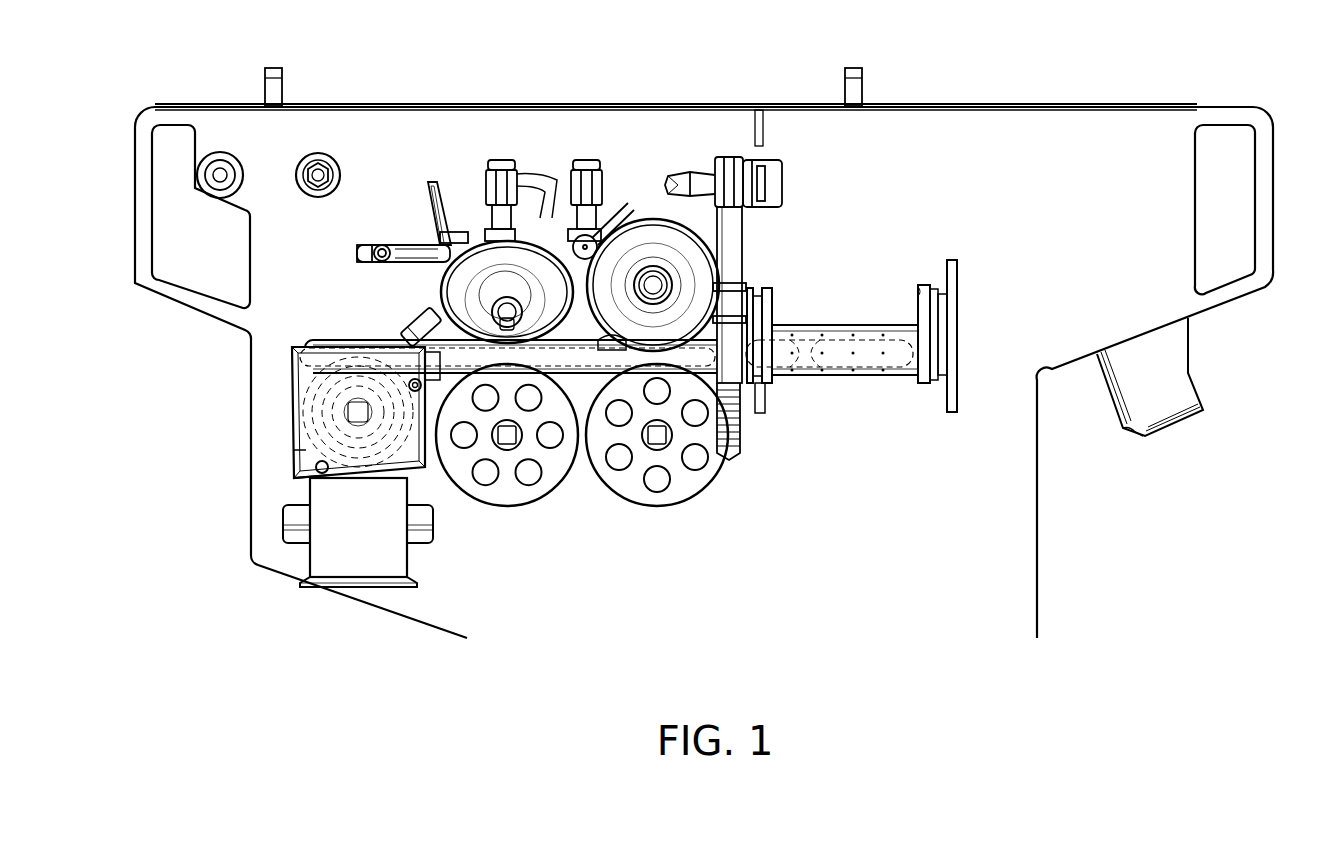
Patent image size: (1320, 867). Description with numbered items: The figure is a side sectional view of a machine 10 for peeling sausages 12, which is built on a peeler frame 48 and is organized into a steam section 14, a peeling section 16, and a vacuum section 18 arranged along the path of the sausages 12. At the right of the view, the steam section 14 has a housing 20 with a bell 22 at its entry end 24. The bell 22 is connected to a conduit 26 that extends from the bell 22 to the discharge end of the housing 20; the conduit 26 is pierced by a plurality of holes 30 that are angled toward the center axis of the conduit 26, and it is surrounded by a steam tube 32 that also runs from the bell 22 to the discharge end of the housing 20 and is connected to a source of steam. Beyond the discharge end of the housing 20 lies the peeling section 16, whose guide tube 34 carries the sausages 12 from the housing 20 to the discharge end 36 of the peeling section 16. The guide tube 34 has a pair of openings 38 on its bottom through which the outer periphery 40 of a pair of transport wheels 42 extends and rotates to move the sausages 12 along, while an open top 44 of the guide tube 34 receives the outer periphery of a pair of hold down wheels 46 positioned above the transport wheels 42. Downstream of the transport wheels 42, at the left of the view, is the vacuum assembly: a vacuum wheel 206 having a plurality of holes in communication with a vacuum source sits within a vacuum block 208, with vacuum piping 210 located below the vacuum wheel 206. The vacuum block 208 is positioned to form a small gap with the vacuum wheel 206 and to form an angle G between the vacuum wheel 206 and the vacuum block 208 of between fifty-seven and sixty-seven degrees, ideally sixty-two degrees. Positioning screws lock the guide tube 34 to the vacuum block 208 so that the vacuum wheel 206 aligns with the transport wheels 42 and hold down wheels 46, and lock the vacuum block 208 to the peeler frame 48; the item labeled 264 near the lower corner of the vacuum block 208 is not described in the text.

The machine 10 is at (990, 25).
The sausages 12 is at (355, 340).
The steam section 14 is at (884, 276).
The peeling section 16 is at (621, 138).
The vacuum section 18 is at (444, 576).
The housing 20 is at (1216, 107).
The bell 22 is at (958, 283).
The entry end 24 is at (982, 341).
The conduit 26 is at (896, 376).
The holes 30 is at (853, 331).
The steam tube 32 is at (812, 314).
The guide tube 34 is at (565, 373).
The discharge end 36 is at (437, 376).
The openings 38 is at (534, 360).
The outer periphery 40 is at (488, 498).
The transport wheels 42 is at (517, 491).
The open top 44 is at (613, 346).
The hold down wheels 46 is at (461, 286).
The peeler frame 48 is at (394, 160).
The vacuum wheel 206 is at (330, 420).
The vacuum block 208 is at (293, 380).
The vacuum piping 210 is at (356, 556).
The corner 264 is at (278, 477).
The angle G is at (300, 450).